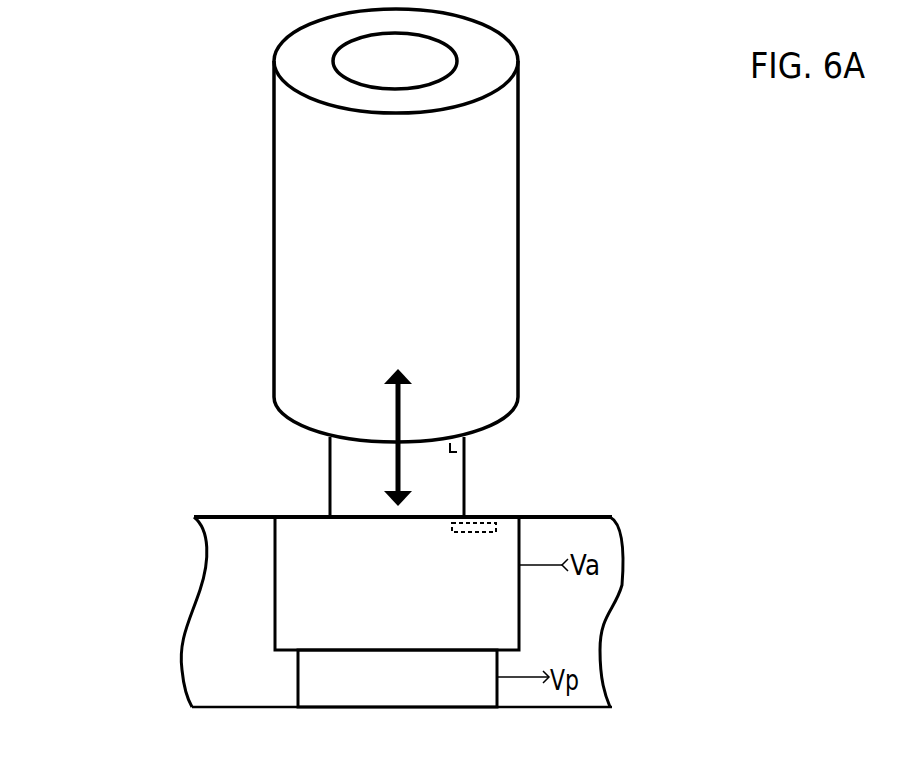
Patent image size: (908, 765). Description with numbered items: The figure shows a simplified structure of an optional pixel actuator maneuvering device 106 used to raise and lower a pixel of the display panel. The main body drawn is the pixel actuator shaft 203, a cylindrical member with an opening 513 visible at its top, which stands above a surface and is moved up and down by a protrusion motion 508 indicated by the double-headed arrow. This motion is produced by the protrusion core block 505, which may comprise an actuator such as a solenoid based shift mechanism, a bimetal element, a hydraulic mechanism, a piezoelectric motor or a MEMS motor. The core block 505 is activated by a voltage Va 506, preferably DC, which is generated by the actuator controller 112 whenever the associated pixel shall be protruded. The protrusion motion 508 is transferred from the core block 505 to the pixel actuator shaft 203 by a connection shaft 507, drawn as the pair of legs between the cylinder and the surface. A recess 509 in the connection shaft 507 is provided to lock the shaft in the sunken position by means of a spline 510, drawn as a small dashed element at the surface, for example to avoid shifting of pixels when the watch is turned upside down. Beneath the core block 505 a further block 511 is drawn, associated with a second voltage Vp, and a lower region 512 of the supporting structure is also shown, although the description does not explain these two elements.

The pixel actuator 106 is at (398, 225).
The pixel actuator shaft 203 is at (519, 186).
The nozzle opening 513 is at (455, 46).
The protrusion motion 508 is at (408, 411).
The connection shaft 507 is at (466, 484).
The recess 509 is at (471, 448).
The spline 510 is at (490, 516).
The actuator controller 112 is at (215, 517).
The protrusion core block 505 is at (397, 583).
The passive layer block 511 is at (397, 678).
The voltage Va 506 is at (603, 551).
The substrate lower layer 512 is at (592, 668).